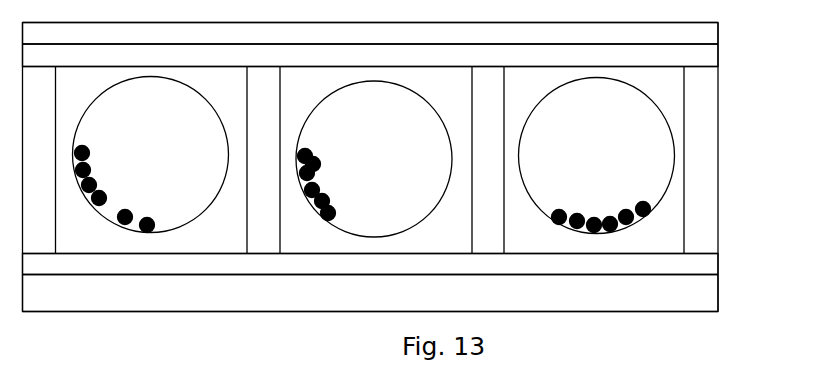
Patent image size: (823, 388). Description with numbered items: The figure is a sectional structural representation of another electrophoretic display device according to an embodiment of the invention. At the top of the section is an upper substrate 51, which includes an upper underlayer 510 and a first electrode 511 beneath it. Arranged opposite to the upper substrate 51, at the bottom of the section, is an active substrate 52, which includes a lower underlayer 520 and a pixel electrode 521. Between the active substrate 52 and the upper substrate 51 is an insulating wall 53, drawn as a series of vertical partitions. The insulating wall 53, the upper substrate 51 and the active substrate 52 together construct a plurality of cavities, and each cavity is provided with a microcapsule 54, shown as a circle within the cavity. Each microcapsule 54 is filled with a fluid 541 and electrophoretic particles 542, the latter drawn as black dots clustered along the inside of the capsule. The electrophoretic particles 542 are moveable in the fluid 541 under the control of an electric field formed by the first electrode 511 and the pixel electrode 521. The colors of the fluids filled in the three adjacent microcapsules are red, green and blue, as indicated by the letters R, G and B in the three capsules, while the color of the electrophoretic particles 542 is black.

The upper substrate 51 is at (778, 30).
The upper underlayer 510 is at (695, 33).
The first electrode 511 is at (683, 55).
The active substrate 52 is at (783, 262).
The lower underlayer 520 is at (705, 291).
The pixel electrode 521 is at (705, 265).
The insulating wall 53 is at (705, 237).
The microcapsule 54 is at (675, 133).
The fluid 541 is at (639, 160).
The electrophoretic particles 542 is at (657, 210).